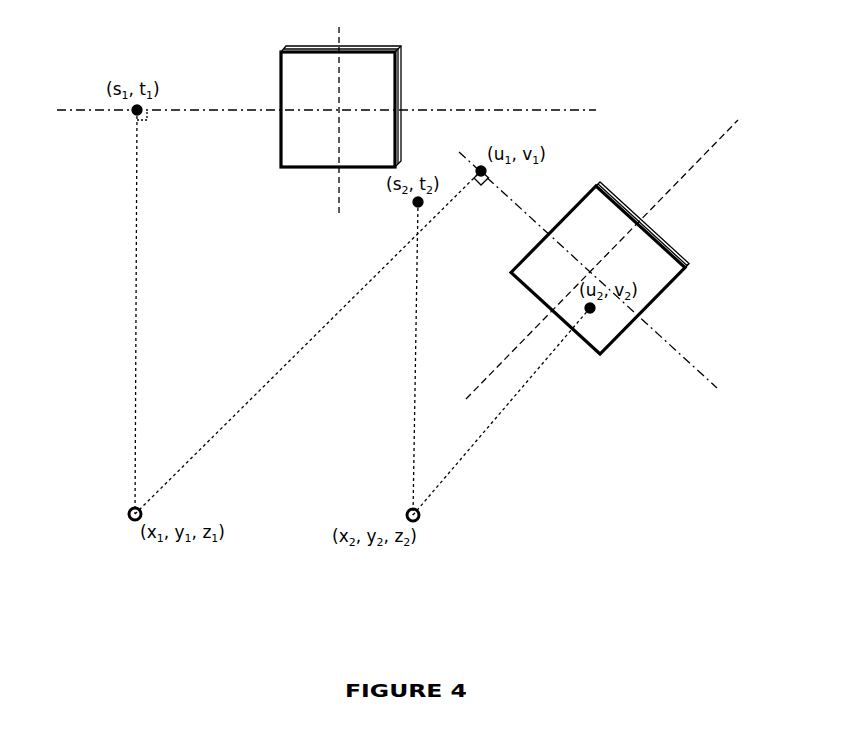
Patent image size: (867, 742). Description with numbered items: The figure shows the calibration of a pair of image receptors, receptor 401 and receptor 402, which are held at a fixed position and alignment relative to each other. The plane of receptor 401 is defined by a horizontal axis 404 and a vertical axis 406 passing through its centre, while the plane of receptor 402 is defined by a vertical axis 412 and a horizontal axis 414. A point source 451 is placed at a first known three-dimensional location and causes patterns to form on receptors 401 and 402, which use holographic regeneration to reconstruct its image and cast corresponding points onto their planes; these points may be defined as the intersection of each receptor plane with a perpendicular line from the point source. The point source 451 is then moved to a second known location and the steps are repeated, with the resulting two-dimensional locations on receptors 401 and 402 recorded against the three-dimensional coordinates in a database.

The receptor 401 is at (400, 67).
The receptor 402 is at (684, 268).
The horizontal axis 404 is at (552, 110).
The vertical axis 406 is at (338, 182).
The vertical axis 412 is at (700, 152).
The horizontal axis 414 is at (698, 360).
The point source 451 is at (120, 502).